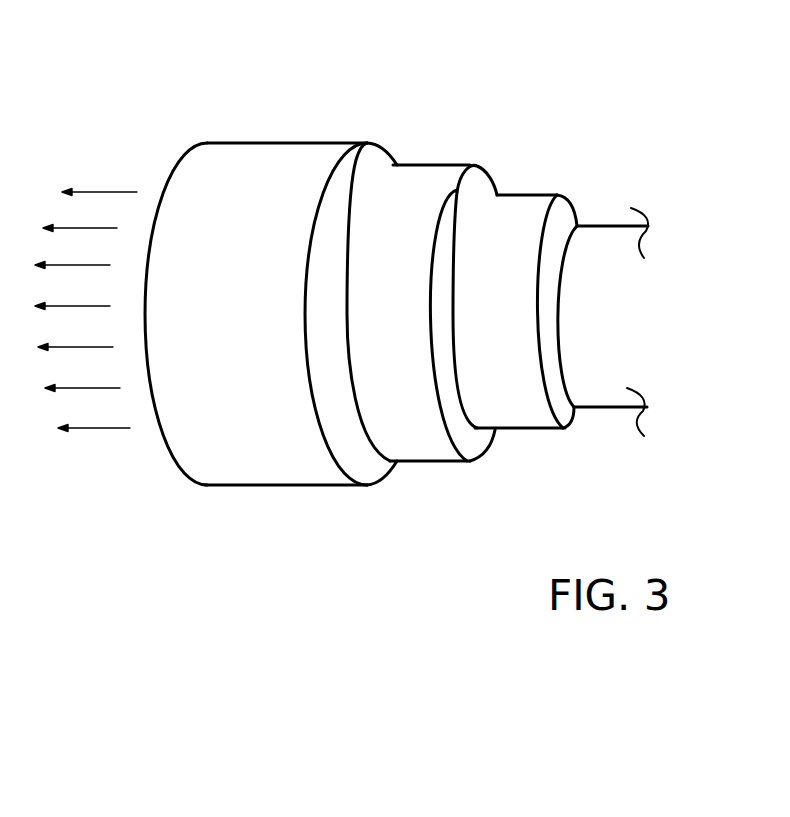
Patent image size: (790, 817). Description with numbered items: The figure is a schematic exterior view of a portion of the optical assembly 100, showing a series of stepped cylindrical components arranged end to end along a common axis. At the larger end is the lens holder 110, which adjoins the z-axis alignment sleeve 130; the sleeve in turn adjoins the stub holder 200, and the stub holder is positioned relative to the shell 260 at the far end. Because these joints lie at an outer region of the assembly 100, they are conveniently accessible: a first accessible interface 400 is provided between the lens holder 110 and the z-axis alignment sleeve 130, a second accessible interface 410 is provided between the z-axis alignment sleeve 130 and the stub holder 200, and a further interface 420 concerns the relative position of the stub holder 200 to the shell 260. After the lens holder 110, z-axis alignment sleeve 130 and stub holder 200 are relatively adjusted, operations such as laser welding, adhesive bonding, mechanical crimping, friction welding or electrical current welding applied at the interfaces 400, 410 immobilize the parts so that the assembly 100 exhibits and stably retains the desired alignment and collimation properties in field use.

The optical assembly 100 is at (485, 58).
The lens holder 110 is at (242, 315).
The z-axis alignment sleeve 130 is at (402, 319).
The stub holder 200 is at (510, 321).
The shell 260 is at (625, 327).
The first accessible interface 400 is at (373, 443).
The second accessible interface 410 is at (470, 407).
The further interface 420 is at (568, 242).